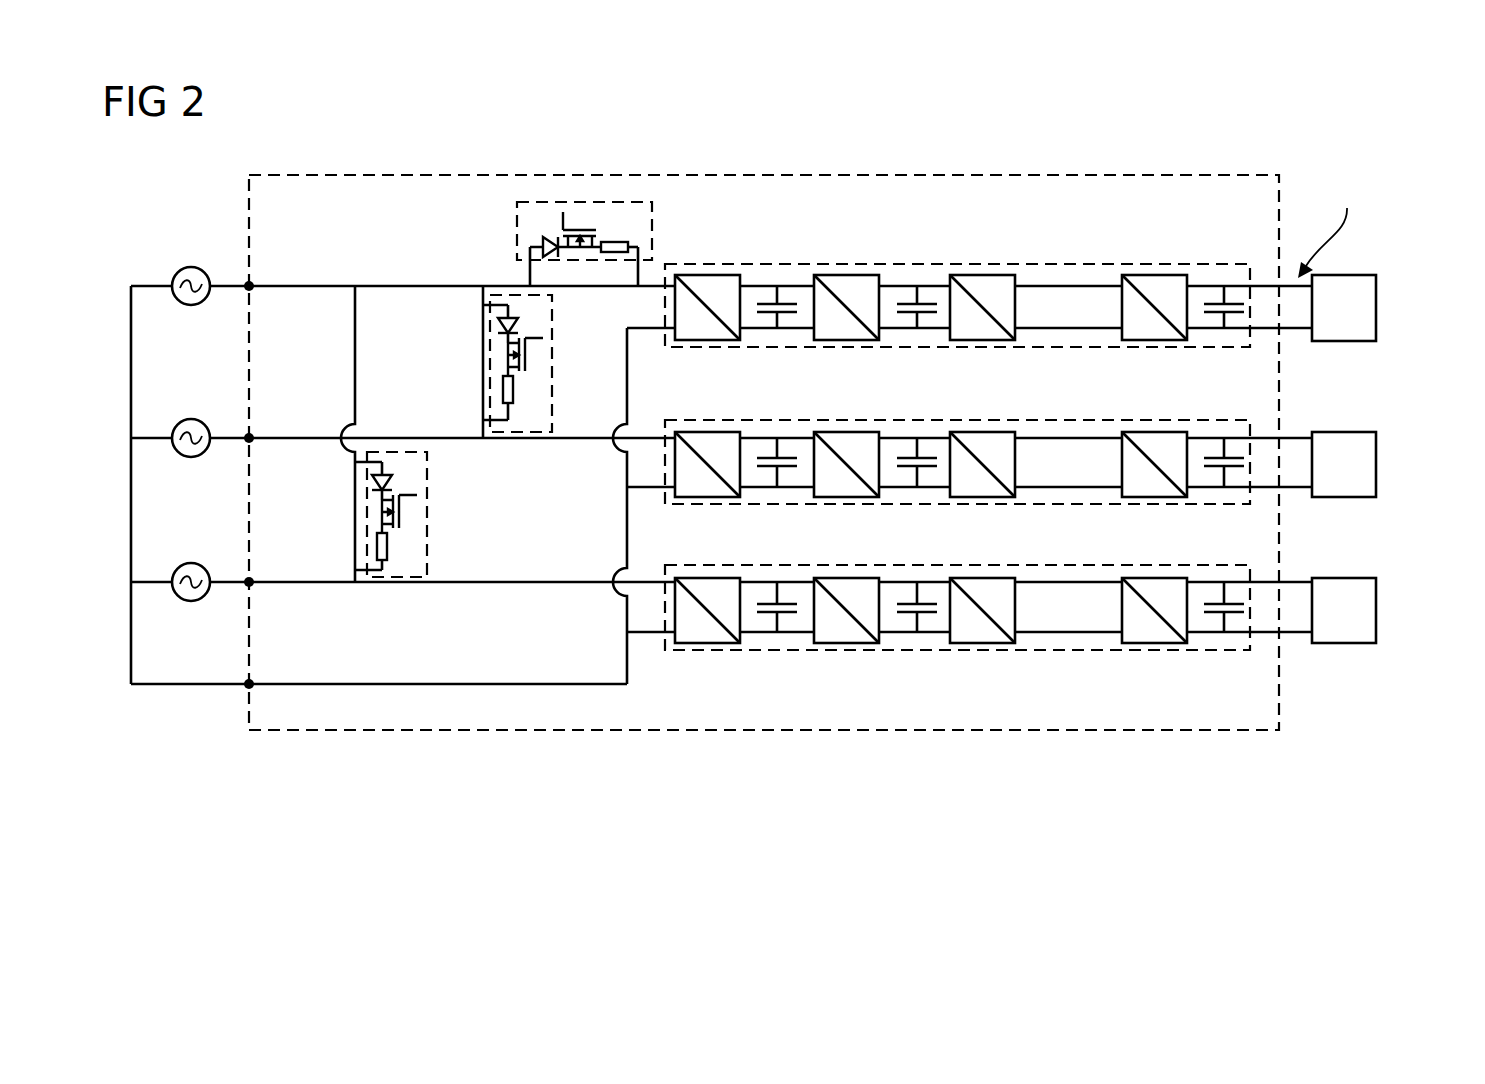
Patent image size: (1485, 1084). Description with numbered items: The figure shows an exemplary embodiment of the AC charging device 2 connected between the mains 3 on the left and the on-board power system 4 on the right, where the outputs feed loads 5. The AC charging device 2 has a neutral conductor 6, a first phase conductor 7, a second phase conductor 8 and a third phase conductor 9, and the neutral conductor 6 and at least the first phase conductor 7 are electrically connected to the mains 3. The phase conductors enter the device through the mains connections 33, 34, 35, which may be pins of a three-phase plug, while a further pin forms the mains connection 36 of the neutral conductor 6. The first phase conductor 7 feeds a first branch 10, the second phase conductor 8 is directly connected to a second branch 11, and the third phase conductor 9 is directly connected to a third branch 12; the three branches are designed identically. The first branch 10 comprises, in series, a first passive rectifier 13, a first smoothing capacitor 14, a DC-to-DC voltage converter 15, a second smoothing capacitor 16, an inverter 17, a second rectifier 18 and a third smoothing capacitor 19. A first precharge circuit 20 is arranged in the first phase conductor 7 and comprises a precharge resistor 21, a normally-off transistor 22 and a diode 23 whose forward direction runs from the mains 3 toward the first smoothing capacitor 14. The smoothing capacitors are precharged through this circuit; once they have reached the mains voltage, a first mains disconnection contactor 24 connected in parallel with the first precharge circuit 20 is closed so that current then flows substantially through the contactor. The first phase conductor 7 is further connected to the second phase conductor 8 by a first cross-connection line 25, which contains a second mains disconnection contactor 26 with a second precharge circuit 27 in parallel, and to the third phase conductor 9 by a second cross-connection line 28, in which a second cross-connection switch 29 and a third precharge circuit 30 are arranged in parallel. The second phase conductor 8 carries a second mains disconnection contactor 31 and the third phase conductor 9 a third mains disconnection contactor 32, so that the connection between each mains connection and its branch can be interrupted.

The AC charging device 2 is at (830, 175).
The mains 3 is at (191, 266).
The on-board power system 4 is at (1326, 228).
The load 5 is at (1376, 308).
The neutral conductor 6 is at (585, 683).
The first phase conductor 7 is at (315, 285).
The second phase conductor 8 is at (313, 437).
The third phase conductor 9 is at (585, 580).
The first branch 10 is at (1068, 264).
The second branch 11 is at (1223, 420).
The third branch 12 is at (1162, 650).
The first passive rectifier 13 is at (706, 275).
The first smoothing capacitor 14 is at (766, 304).
The DC-to-DC voltage converter 15 is at (846, 275).
The second smoothing capacitor 16 is at (910, 304).
The inverter 17 is at (990, 275).
The second rectifier 18 is at (1152, 275).
The third smoothing capacitor 19 is at (1215, 304).
The first precharge circuit 20 is at (640, 202).
The precharge resistor 21 is at (614, 242).
The normally-off transistor 22 is at (575, 230).
The diode 23 is at (543, 243).
The first mains disconnection contactor 24 is at (587, 285).
The first cross-connection line 25 is at (483, 343).
The second mains disconnection contactor 26 is at (487, 363).
The second precharge circuit 27 is at (533, 438).
The second cross-connection line 28 is at (357, 302).
The second cross-connection switch 29 is at (356, 517).
The third precharge circuit 30 is at (408, 578).
The second mains disconnection contactor 31 is at (445, 437).
The third mains disconnection contactor 32 is at (317, 583).
The mains connection 33 is at (251, 283).
The mains connection 34 is at (251, 435).
The mains connection 35 is at (248, 579).
The mains connection 36 is at (249, 688).